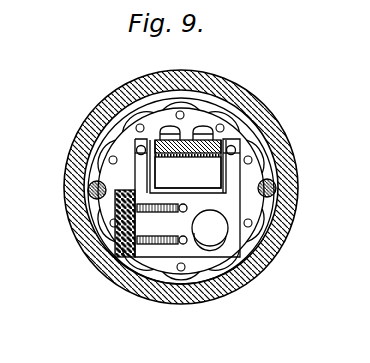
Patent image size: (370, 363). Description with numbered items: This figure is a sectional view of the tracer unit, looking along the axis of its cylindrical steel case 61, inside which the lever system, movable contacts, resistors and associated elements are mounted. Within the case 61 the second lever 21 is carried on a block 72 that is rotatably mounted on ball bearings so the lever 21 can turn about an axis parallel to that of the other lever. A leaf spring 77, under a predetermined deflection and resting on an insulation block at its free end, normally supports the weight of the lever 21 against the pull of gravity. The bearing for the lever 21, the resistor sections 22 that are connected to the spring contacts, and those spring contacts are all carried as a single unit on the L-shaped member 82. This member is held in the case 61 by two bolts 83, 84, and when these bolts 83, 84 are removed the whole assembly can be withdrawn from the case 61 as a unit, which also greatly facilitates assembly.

The cylindrical steel case 61 is at (80, 140).
The second lever 21 is at (199, 112).
The resistor sections 22 is at (176, 279).
The block 72 is at (155, 171).
The leaf spring 77 is at (172, 159).
The L-shaped member 82 is at (115, 230).
The bolt 83 is at (92, 190).
The bolt 84 is at (277, 188).